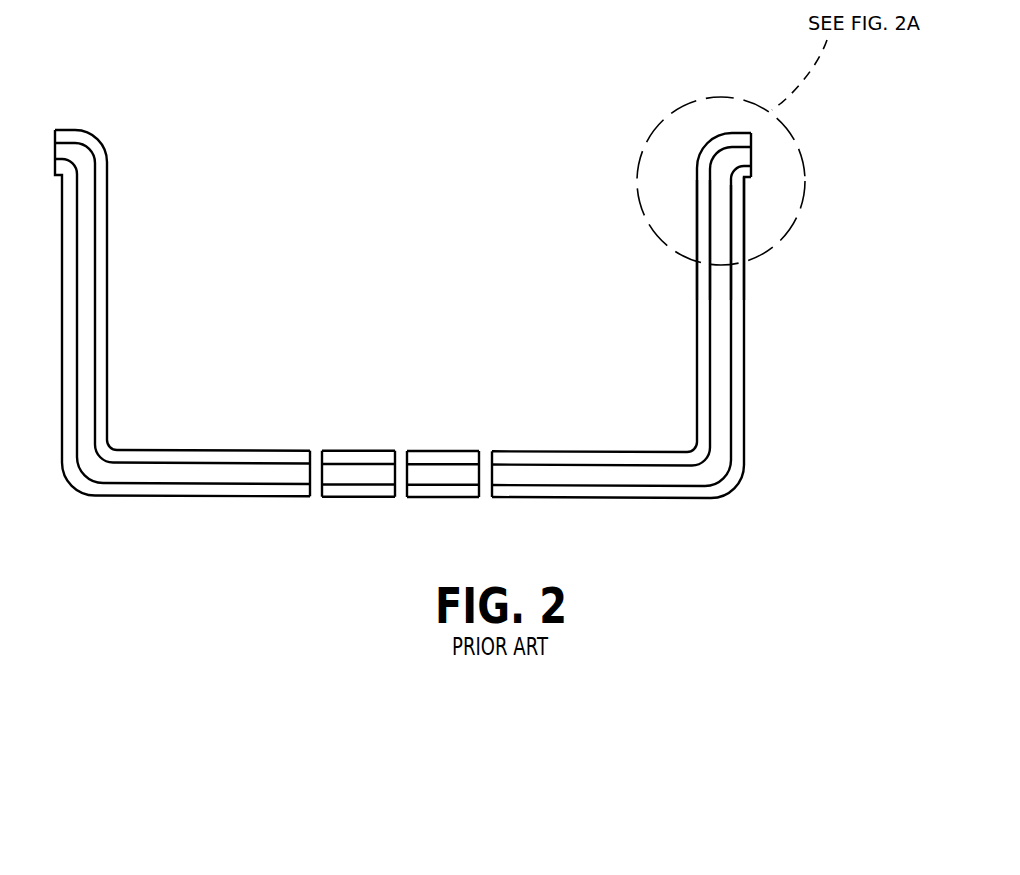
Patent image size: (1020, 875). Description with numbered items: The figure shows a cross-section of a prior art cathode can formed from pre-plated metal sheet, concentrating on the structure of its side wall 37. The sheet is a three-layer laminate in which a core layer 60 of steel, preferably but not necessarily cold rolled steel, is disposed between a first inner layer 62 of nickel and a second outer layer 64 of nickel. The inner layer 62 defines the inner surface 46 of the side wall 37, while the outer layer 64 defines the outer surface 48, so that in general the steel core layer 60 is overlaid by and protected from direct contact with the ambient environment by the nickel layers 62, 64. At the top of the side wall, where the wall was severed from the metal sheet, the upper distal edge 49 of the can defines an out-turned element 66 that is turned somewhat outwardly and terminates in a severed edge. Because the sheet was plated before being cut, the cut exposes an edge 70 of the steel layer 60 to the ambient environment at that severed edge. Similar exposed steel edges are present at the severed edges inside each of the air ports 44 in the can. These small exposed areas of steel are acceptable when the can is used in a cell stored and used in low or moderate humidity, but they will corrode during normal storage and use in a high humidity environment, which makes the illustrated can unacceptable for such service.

The side wall 37 is at (743, 381).
The air ports 44 is at (314, 458).
The inner surface 46 is at (697, 322).
The outer surface 48 is at (743, 318).
The upper distal edge 49 is at (752, 138).
The core layer 60 is at (626, 481).
The first inner layer 62 is at (538, 457).
The second outer layer 64 is at (603, 492).
The out-turned element 66 is at (410, 868).
The edge 70 is at (752, 158).